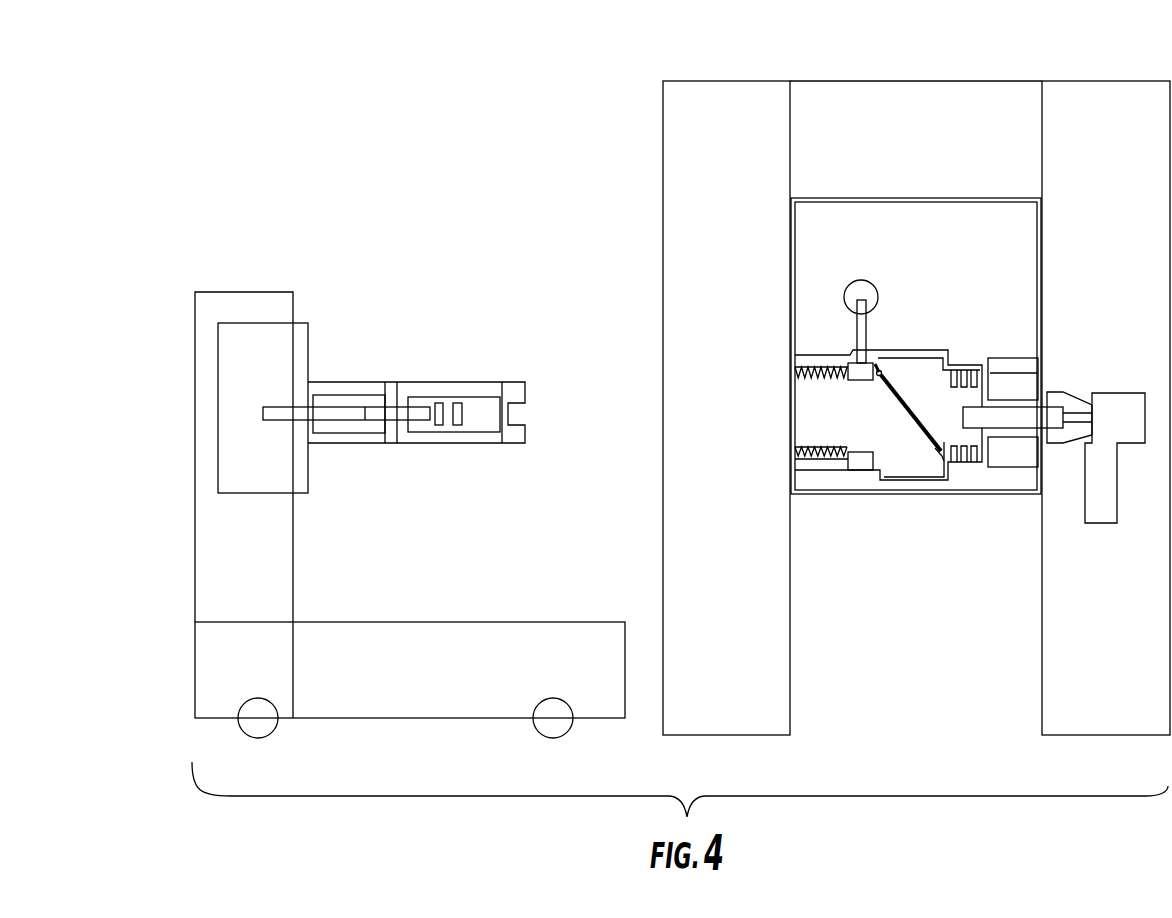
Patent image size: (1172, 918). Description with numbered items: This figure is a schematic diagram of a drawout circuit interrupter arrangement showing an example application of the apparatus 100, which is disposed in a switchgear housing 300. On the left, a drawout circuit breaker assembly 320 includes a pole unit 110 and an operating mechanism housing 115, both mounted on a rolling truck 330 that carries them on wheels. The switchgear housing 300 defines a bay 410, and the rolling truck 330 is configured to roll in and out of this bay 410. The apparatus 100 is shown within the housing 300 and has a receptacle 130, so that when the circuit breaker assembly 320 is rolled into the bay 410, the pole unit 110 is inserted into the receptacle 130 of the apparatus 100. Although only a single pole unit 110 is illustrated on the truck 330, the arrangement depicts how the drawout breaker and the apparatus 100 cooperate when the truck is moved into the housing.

The apparatus 100 is at (968, 340).
The pole unit 110 is at (452, 382).
The operating mechanism housing 115 is at (308, 337).
The receptacle 130 is at (917, 450).
The switchgear housing 300 is at (1010, 80).
The drawout circuit breaker assembly 320 is at (410, 459).
The rolling truck 330 is at (492, 622).
The bay 410 is at (943, 702).